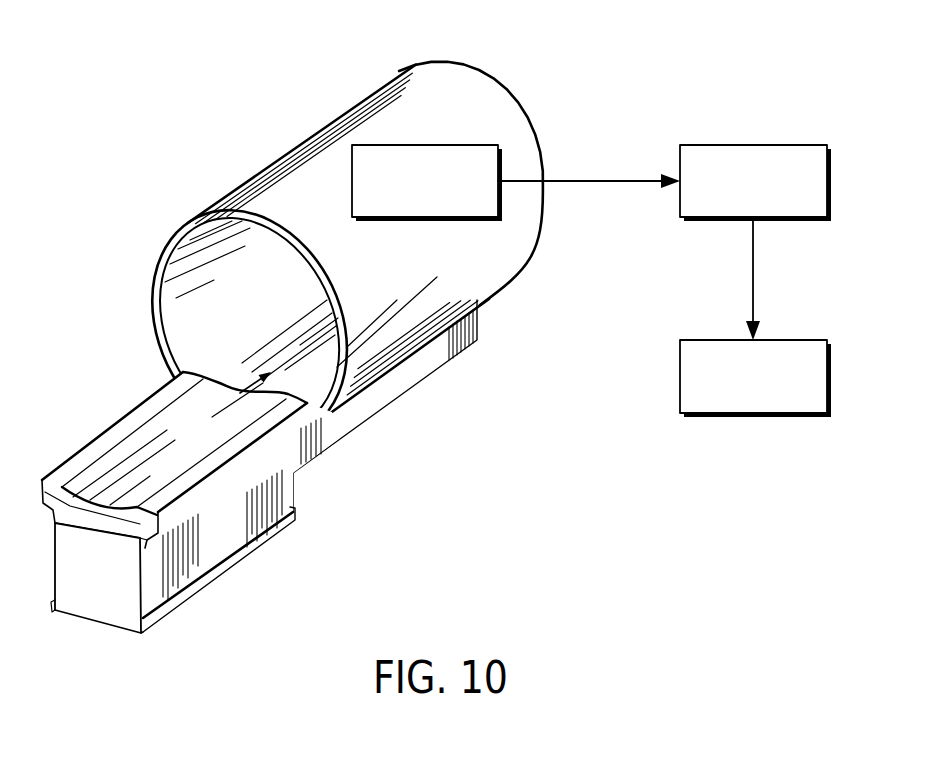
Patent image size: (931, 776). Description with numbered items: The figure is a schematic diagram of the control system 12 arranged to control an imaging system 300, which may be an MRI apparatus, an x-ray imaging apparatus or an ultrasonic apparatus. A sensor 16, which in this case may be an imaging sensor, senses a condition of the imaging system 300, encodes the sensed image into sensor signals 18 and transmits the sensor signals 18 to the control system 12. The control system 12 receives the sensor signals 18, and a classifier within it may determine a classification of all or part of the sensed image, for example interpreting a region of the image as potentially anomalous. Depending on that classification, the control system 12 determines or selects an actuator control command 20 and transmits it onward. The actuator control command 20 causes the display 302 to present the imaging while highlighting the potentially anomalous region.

The imaging system 300 is at (191, 56).
The sensor 16 is at (425, 145).
The sensor signals 18 is at (590, 178).
The control system 12 is at (753, 145).
The actuator control command 20 is at (753, 279).
The display 302 is at (680, 378).